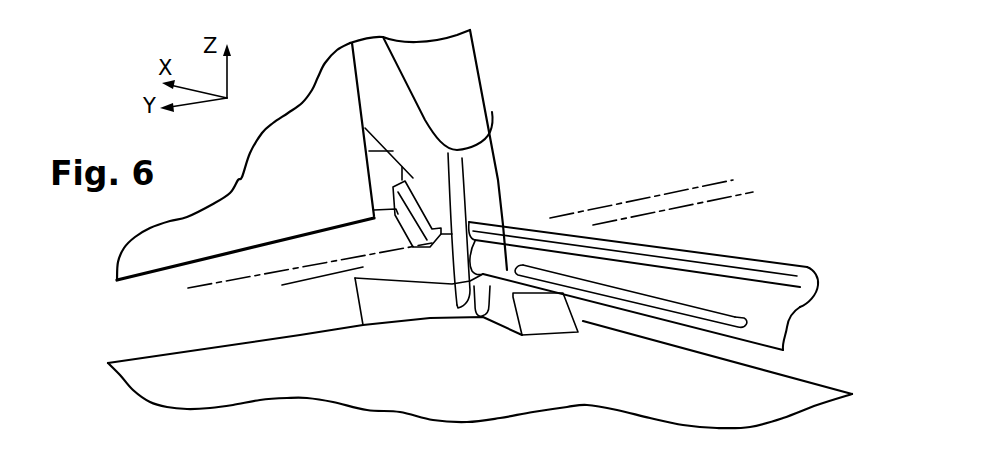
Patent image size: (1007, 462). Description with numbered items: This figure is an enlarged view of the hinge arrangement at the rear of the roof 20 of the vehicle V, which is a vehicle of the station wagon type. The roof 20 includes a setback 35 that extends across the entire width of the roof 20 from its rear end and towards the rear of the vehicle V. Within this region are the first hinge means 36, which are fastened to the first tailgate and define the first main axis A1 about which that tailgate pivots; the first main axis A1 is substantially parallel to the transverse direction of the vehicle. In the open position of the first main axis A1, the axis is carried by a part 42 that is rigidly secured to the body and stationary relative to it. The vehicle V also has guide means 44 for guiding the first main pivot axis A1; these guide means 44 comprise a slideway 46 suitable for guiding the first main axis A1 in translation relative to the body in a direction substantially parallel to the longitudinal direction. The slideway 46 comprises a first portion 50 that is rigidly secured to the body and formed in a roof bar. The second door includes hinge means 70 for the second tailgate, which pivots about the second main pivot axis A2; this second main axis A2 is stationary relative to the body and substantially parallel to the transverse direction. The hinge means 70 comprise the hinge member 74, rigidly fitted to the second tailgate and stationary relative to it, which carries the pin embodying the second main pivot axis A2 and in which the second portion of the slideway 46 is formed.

The roof 20 is at (172, 380).
The setback 35 is at (212, 327).
The first hinge means 36 is at (432, 189).
The part 42 is at (748, 298).
The guide means 44 is at (787, 248).
The slideway 46 is at (703, 295).
The first portion 50 is at (642, 275).
The hinge means 70 is at (662, 242).
The hinge member 74 is at (451, 264).
The first main axis A1 is at (713, 183).
The second main pivot axis A2 is at (322, 280).
The vehicle V is at (102, 401).